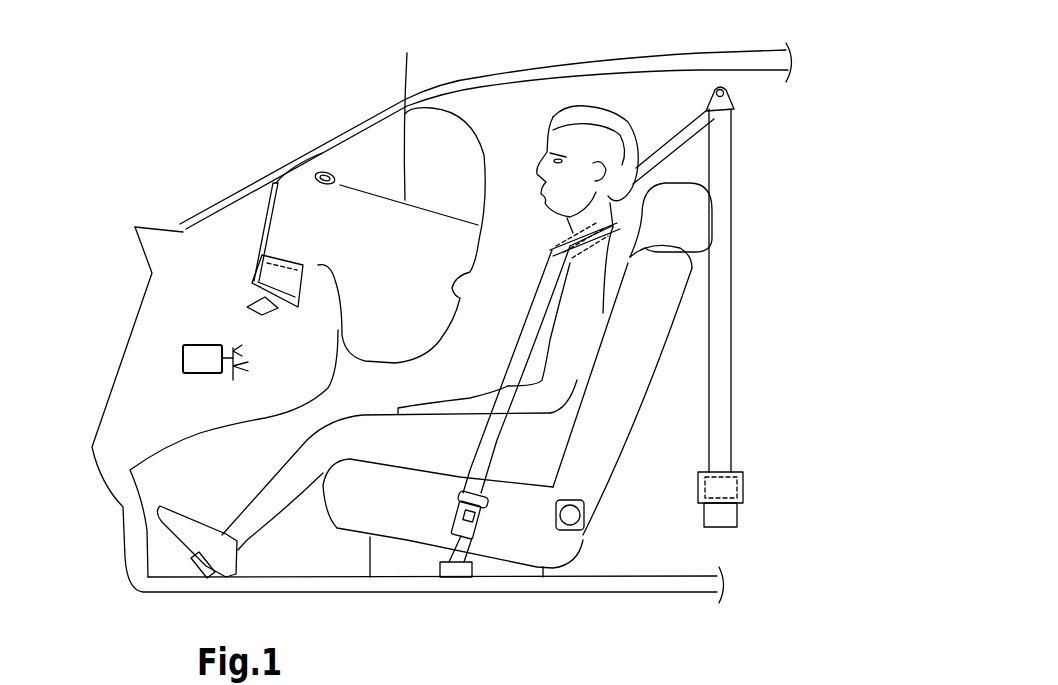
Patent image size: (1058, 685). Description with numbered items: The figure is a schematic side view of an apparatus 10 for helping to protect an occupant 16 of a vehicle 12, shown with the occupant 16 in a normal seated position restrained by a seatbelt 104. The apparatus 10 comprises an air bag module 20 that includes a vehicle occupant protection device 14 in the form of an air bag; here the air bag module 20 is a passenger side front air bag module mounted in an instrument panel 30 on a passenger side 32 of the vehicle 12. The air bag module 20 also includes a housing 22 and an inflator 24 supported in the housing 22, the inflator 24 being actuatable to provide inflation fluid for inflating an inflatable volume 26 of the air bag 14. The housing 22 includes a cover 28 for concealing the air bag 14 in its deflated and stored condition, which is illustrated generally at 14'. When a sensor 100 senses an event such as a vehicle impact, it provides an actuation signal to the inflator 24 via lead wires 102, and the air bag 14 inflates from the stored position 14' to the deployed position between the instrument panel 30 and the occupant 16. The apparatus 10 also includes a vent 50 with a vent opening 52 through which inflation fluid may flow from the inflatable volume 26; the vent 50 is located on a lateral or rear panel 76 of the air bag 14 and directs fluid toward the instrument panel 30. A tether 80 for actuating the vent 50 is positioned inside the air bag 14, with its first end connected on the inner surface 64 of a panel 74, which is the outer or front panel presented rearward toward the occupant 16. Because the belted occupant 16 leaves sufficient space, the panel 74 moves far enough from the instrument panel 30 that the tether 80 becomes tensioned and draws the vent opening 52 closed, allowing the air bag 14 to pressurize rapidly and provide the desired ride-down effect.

The apparatus 10 is at (230, 137).
The vehicle 12 is at (152, 195).
The vehicle occupant protection device 14 is at (486, 118).
The deflated and stored condition of the air bag 14' is at (196, 245).
The occupant 16 is at (590, 288).
The air bag module 20 is at (200, 268).
The housing 22 is at (250, 283).
The inflator 24 is at (300, 309).
The inflatable volume 26 is at (372, 155).
The cover 28 is at (272, 202).
The instrument panel 30 is at (273, 377).
The passenger side 32 is at (516, 575).
The vent 50 is at (343, 201).
The vent opening 52 is at (323, 175).
The inner surface 64 is at (460, 298).
The panel 74 is at (480, 157).
The panel 76 is at (300, 193).
The tether 80 is at (406, 113).
The sensor 100 is at (186, 357).
The lead wires 102 is at (258, 313).
The seatbelt 104 is at (483, 453).